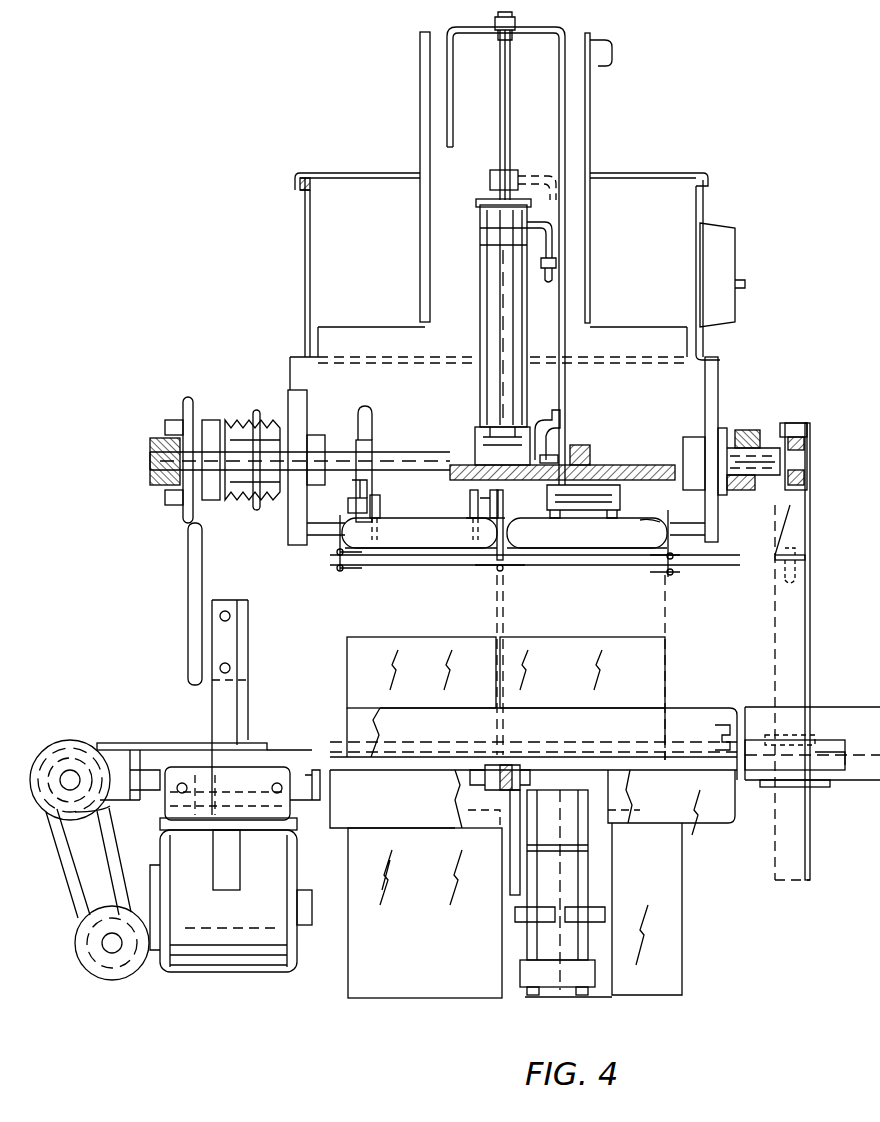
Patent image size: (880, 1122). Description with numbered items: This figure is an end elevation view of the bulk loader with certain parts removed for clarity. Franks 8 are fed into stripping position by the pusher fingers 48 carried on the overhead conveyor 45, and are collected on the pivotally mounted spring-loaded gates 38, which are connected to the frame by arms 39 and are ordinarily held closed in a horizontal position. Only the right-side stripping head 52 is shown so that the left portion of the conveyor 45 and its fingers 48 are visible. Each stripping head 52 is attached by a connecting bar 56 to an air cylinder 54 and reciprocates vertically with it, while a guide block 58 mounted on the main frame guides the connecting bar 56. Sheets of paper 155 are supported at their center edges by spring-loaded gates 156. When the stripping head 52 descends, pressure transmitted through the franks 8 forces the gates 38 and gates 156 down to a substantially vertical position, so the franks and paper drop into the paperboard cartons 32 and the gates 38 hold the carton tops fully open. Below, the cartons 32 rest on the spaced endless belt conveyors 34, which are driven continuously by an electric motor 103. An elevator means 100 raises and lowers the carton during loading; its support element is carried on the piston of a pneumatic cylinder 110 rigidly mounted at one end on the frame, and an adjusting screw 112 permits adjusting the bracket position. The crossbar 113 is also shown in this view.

The franks 8 is at (640, 520).
The paperboard carton 32 is at (347, 660).
The endless belt conveyor 34 is at (97, 742).
The spring-loaded gate 38 is at (338, 555).
The arm 39 is at (288, 535).
The overhead conveyor 45 is at (380, 416).
The pusher finger 48 is at (470, 515).
The stripping head 52 is at (640, 498).
The air cylinder 54 is at (480, 290).
The connecting bar 56 is at (442, 130).
The guide block 58 is at (575, 445).
The elevator means 100 is at (605, 828).
The electric motor 103 is at (238, 975).
The pneumatic cylinder 110 is at (598, 880).
The adjusting screw 112 is at (316, 805).
The crossbar 113 is at (337, 738).
The sheets of paper 155 is at (385, 560).
The spring-loaded gate 156 is at (348, 578).